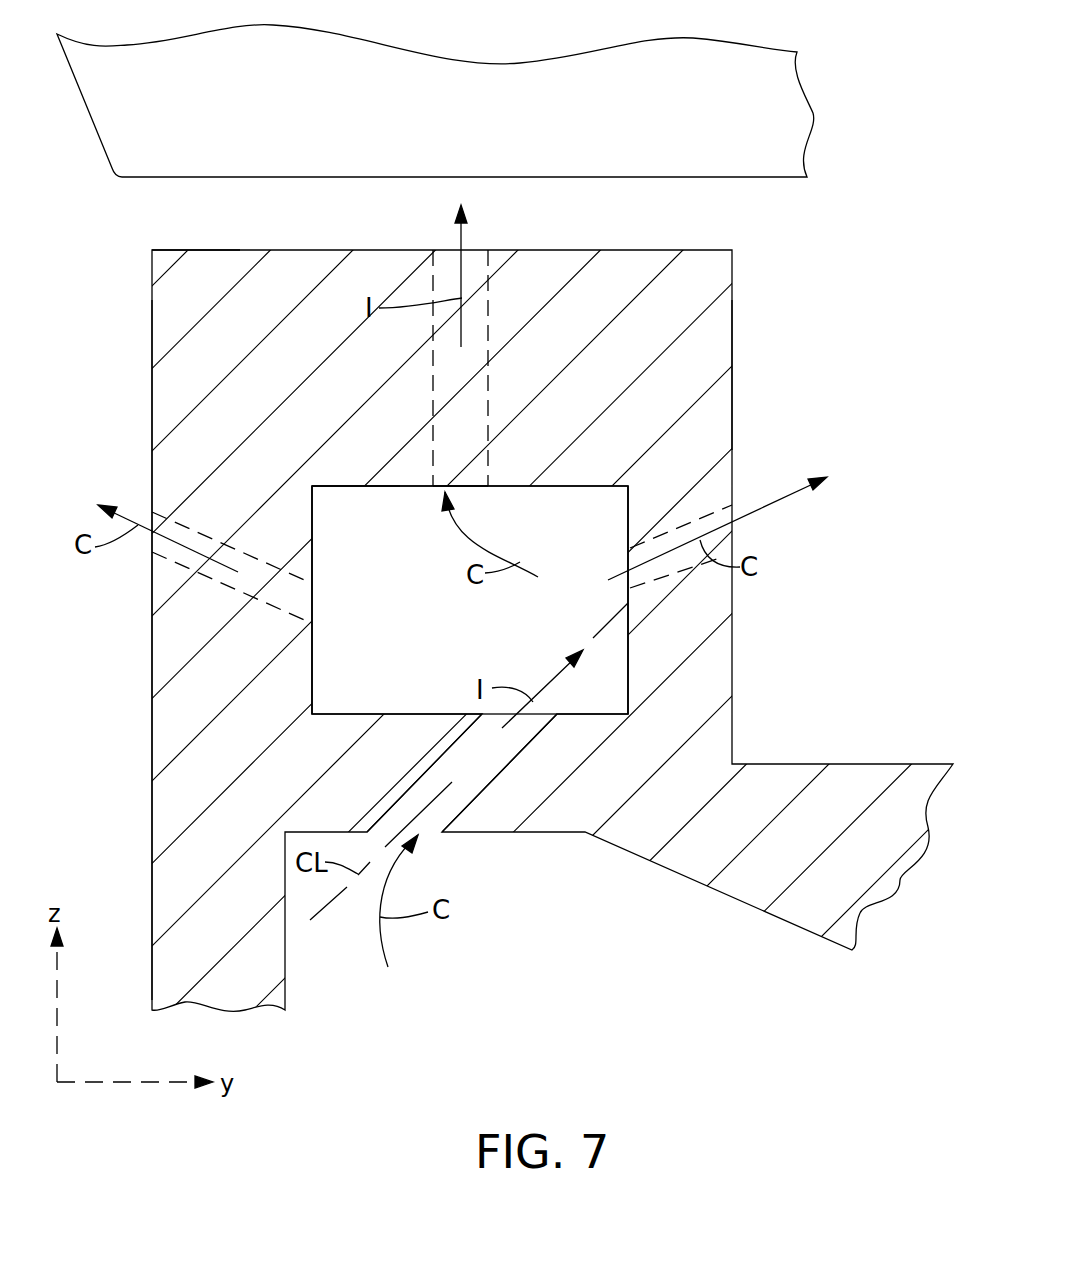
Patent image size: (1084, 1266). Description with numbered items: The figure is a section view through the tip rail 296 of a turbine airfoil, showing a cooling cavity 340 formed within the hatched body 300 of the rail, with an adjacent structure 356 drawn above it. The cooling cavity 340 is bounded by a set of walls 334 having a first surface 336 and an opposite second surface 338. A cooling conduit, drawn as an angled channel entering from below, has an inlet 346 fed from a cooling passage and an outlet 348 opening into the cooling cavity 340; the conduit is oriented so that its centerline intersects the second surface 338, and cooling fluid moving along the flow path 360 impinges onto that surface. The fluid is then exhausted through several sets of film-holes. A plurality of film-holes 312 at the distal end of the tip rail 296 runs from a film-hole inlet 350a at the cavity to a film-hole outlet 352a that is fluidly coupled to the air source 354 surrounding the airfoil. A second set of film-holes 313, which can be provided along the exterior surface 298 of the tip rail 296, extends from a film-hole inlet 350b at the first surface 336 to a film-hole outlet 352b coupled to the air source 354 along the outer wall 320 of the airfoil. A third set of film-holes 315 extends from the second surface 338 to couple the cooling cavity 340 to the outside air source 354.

The adjacent component 356 is at (476, 147).
The body 300 is at (874, 670).
The cooling cavity 340 is at (443, 618).
The air source 354 is at (100, 700).
The tip rail 296 is at (198, 312).
The exterior surface 298 is at (732, 376).
The film-holes 312 is at (473, 395).
The film-hole outlet 352a is at (478, 250).
The set of walls 334 is at (320, 543).
The film-hole inlet 350a is at (480, 486).
The first surface 336 is at (312, 565).
The second surface 338 is at (628, 538).
The film-hole inlet 350b is at (312, 612).
The second set of film-holes 313 is at (218, 573).
The film-hole outlet 352b is at (152, 518).
The third set of film-holes 315 is at (678, 532).
The outlet 348 is at (540, 715).
The inlet 346 is at (432, 835).
The flow path 360 is at (497, 762).
The outer wall 320 is at (147, 798).